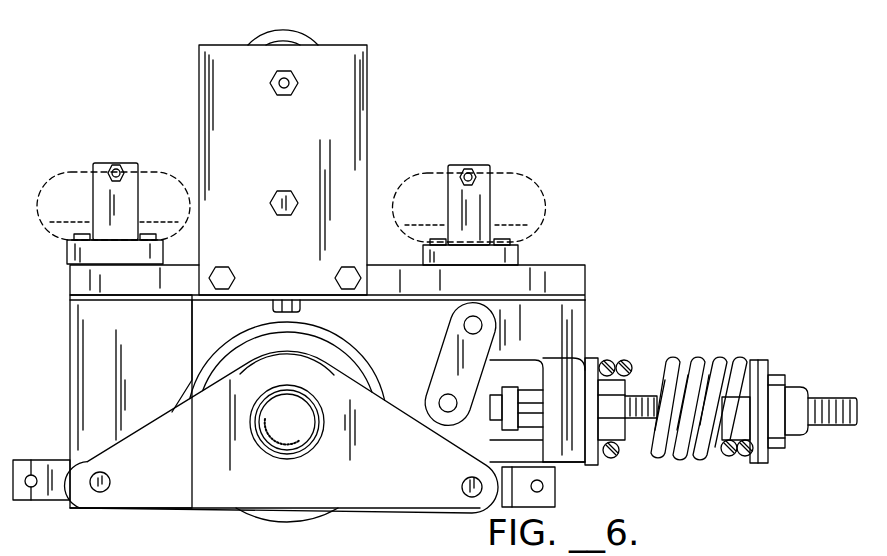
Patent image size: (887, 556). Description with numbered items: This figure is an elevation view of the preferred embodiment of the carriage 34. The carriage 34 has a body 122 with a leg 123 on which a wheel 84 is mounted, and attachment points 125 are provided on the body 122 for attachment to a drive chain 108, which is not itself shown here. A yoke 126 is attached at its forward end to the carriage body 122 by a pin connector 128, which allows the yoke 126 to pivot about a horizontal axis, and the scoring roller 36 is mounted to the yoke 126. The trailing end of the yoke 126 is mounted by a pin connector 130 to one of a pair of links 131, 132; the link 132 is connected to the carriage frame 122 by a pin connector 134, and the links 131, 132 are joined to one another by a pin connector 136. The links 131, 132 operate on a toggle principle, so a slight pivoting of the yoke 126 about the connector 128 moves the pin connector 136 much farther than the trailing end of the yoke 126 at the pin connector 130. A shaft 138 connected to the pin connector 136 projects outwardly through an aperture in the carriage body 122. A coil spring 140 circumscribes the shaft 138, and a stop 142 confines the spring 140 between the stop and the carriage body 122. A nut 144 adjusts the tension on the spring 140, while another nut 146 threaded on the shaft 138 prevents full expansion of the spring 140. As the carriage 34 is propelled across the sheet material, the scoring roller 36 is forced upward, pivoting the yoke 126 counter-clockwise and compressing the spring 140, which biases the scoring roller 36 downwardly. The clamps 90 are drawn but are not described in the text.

The carriage 34 is at (574, 256).
The scoring roller 36 is at (292, 518).
The wheel 84 is at (320, 45).
The clamp 90 is at (63, 172).
The drive chain 108 is at (412, 555).
The body 122 is at (585, 286).
The leg 123 is at (362, 132).
The attachment points 125 is at (18, 500).
The yoke 126 is at (214, 495).
The pin connector 128 is at (106, 492).
The pin connector 130 is at (474, 498).
The link 131 is at (490, 444).
The link 132 is at (453, 352).
The pin connector 134 is at (464, 323).
The pin connector 136 is at (445, 396).
The shaft 138 is at (647, 397).
The coil spring 140 is at (697, 358).
The stop 142 is at (762, 360).
The nut 144 is at (795, 388).
The nut 146 is at (510, 403).